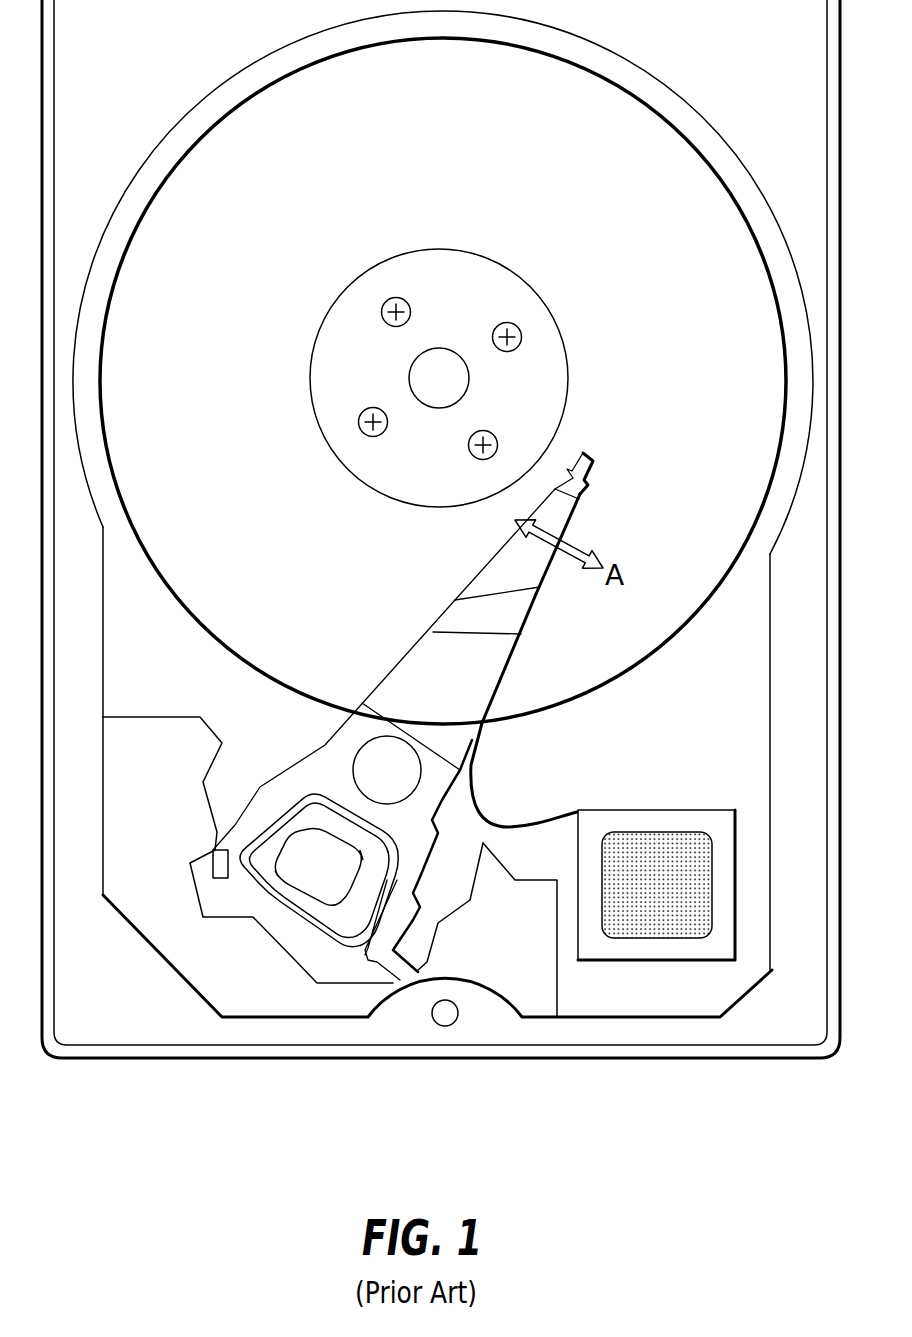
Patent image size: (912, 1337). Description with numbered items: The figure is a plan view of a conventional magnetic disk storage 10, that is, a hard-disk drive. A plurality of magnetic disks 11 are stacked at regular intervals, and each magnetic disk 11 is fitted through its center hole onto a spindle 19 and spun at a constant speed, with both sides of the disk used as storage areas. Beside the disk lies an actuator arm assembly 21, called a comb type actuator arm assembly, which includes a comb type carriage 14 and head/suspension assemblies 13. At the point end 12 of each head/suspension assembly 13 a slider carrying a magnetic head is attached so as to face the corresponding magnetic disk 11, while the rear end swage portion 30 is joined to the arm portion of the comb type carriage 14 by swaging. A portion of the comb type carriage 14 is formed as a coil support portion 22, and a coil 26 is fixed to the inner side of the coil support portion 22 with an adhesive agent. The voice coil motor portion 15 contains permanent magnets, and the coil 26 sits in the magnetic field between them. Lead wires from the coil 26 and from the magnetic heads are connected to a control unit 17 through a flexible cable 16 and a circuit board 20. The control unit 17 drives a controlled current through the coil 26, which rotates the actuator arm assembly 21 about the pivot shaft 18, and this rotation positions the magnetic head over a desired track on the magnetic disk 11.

The magnetic disk storage 10 is at (505, 1082).
The magnetic disk 11 is at (639, 277).
The point end 12 is at (587, 485).
The head/suspension assembly 13 is at (535, 585).
The comb type carriage 14 is at (395, 668).
The voice coil motor portion 15 is at (516, 956).
The flexible cable 16 is at (472, 785).
The control unit 17 is at (637, 845).
The pivot shaft 18 is at (367, 760).
The spindle 19 is at (453, 393).
The circuit board 20 is at (705, 808).
The actuator arm assembly 21 is at (428, 609).
The coil support portion 22 is at (212, 853).
The coil 26 is at (297, 907).
The rear end swage portion 30 is at (503, 650).